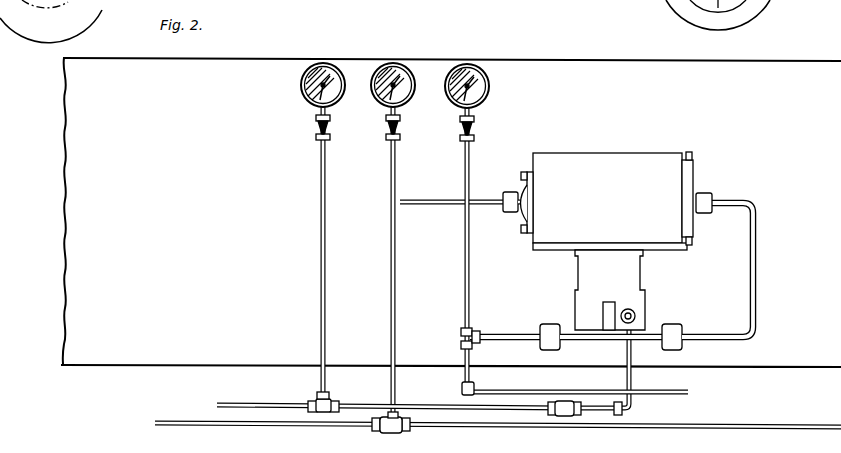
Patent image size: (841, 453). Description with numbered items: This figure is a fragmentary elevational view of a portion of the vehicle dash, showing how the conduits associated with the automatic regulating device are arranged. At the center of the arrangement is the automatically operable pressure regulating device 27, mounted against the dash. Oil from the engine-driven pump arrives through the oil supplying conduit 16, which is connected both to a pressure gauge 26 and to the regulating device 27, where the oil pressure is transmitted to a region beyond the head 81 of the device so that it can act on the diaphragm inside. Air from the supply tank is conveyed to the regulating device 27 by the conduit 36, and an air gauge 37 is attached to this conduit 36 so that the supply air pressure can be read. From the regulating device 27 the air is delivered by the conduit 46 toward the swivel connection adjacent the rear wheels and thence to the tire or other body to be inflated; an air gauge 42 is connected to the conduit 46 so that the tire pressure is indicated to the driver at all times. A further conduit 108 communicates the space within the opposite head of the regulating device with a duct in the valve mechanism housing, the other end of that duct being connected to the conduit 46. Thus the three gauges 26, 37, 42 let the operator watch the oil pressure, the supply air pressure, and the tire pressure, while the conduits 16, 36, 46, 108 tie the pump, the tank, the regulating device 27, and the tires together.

The oil supplying conduit 16 is at (267, 423).
The pressure gauge 26 is at (395, 66).
The automatically operable pressure regulating device 27 is at (601, 172).
The conduit 36 is at (234, 403).
The air gauge 37 is at (323, 64).
The air gauge 42 is at (478, 70).
The conduit 46 is at (480, 330).
The head 81 is at (528, 176).
The conduit 108 is at (760, 278).